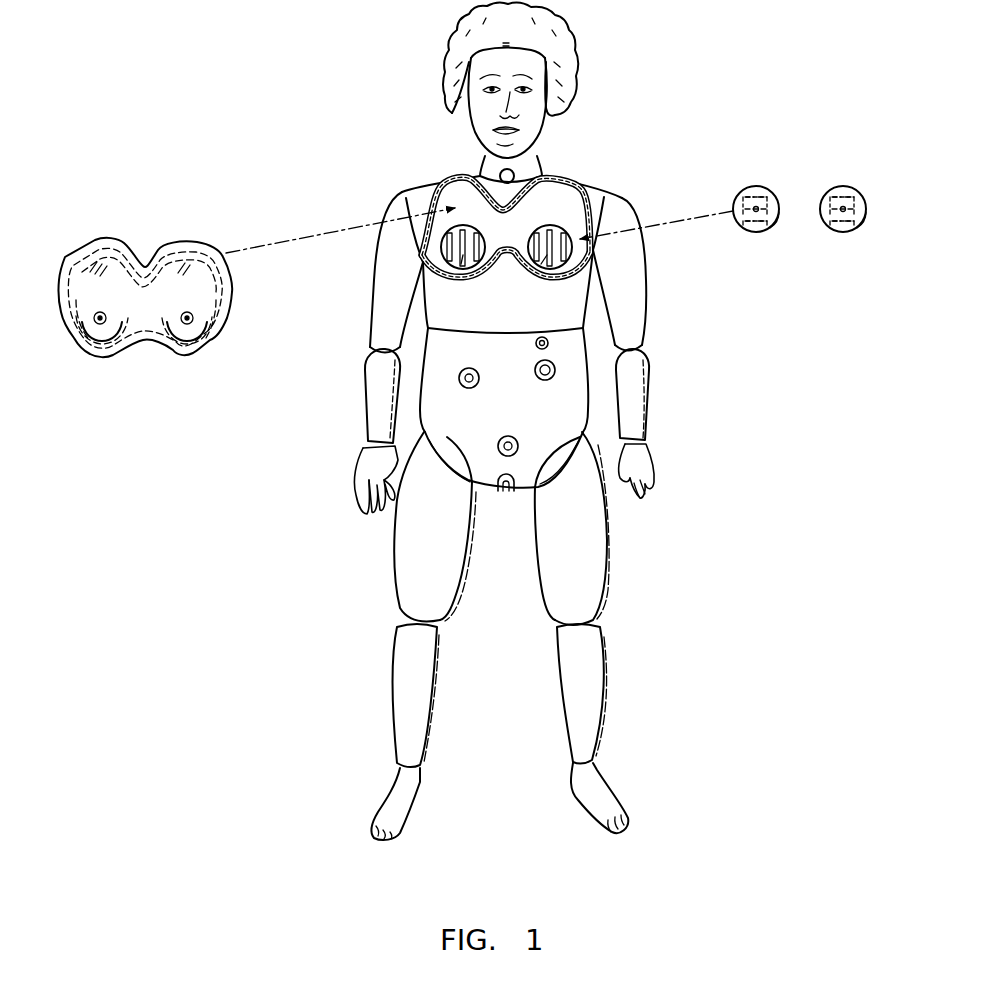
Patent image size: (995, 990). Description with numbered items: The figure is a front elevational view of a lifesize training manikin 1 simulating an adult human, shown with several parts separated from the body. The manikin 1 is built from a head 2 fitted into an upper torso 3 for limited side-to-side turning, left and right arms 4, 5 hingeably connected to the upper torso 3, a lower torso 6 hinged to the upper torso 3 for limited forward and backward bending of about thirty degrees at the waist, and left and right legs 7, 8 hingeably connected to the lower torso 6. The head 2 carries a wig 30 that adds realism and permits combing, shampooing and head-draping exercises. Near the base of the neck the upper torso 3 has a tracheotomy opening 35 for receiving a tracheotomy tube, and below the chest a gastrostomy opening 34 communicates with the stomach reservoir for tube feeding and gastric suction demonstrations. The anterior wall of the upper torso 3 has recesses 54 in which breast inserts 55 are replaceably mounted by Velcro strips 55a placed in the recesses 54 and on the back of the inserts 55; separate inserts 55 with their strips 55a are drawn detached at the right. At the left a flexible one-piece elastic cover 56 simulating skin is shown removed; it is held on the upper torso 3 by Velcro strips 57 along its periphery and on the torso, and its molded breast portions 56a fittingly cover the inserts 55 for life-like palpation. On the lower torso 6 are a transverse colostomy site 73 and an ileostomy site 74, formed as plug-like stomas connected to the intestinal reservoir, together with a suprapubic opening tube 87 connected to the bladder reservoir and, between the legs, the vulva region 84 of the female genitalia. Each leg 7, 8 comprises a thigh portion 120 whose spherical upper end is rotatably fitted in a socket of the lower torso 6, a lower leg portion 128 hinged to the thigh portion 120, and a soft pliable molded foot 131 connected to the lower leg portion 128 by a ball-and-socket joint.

The training manikin 1 is at (424, 94).
The head 2 is at (470, 134).
The upper torso 3 is at (596, 183).
The left arm 4 is at (647, 282).
The right arm 5 is at (367, 307).
The lower torso 6 is at (460, 420).
The left leg 7 is at (617, 584).
The right leg 8 is at (378, 586).
The wig 30 is at (569, 50).
The gastrostomy opening 34 is at (540, 336).
The tracheotomy opening 35 is at (514, 176).
The recesses 54 is at (527, 228).
The breast inserts 55 is at (755, 187).
The Velcro strips 55a is at (461, 264).
The elastic cover 56 is at (92, 243).
The molded breast portions 56a is at (92, 330).
The Velcro strips 57 is at (440, 185).
The transverse colostomy site 73 is at (538, 372).
The ileostomy site 74 is at (466, 371).
The vulva region 84 is at (507, 496).
The suprapubic opening tube 87 is at (516, 441).
The thigh portion 120 is at (410, 542).
The lower leg portion 128 is at (400, 685).
The foot 131 is at (393, 790).